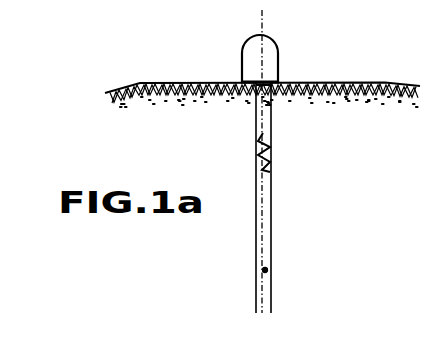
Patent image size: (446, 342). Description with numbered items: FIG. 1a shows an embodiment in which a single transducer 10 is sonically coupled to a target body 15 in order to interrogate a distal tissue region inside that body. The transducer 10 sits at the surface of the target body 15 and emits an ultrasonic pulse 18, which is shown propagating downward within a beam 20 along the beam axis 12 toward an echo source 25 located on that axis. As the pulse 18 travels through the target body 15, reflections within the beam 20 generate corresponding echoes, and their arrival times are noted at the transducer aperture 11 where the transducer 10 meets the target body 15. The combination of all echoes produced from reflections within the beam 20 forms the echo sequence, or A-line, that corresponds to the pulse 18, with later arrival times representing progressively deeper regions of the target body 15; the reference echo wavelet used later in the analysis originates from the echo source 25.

The transducer 10 is at (272, 66).
The transducer aperture 11 is at (272, 86).
The beam axis 12 is at (262, 30).
The target body 15 is at (388, 151).
The ultrasonic pulse 18 is at (270, 168).
The beam 20 is at (271, 206).
The echo source 25 is at (266, 269).